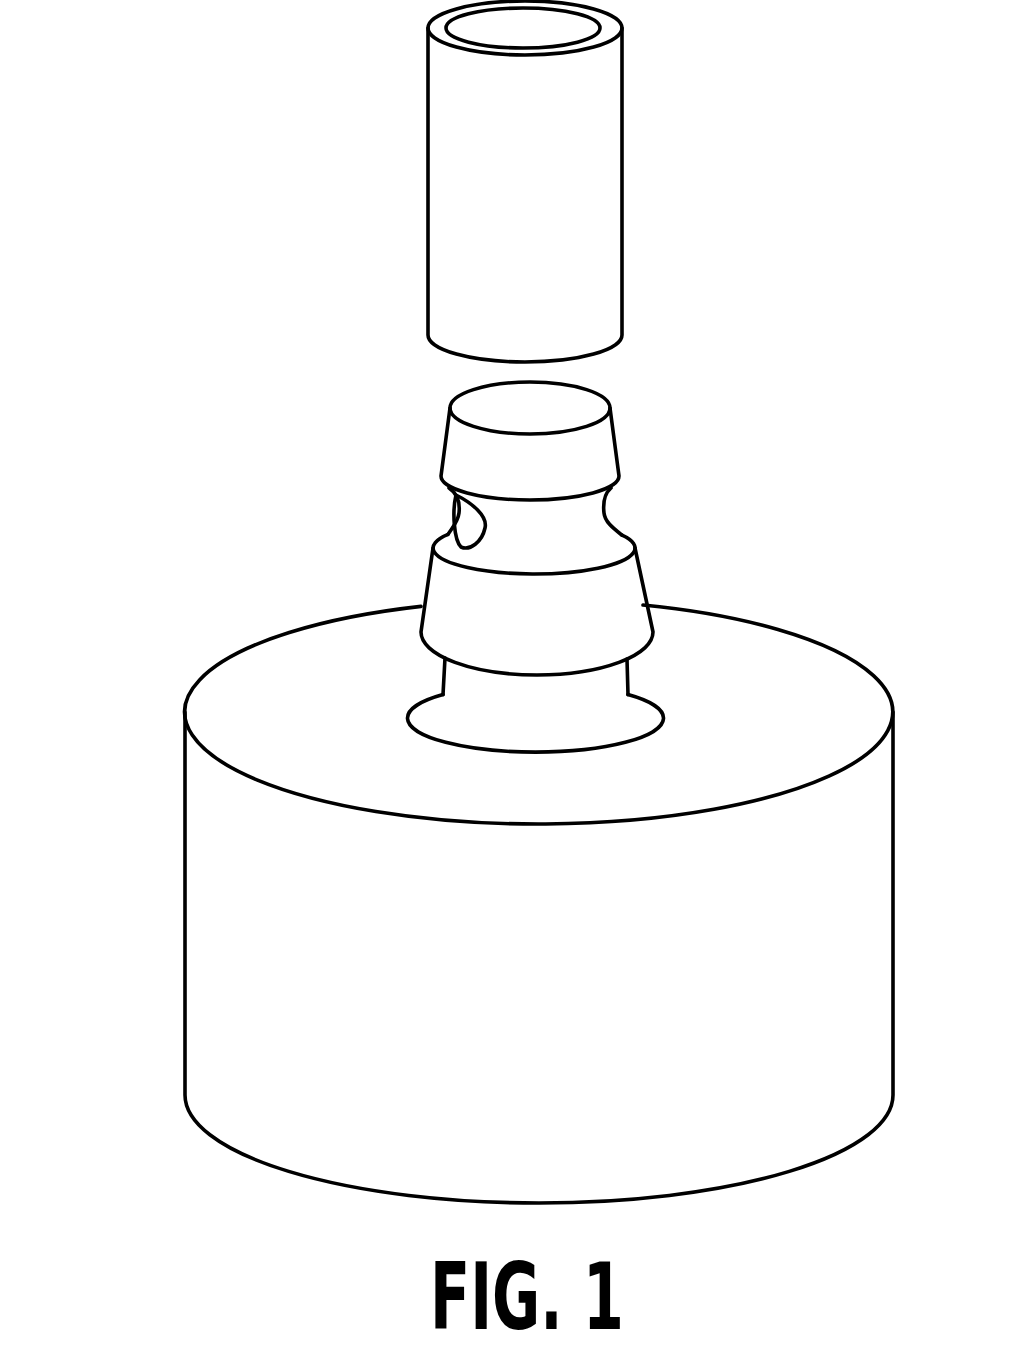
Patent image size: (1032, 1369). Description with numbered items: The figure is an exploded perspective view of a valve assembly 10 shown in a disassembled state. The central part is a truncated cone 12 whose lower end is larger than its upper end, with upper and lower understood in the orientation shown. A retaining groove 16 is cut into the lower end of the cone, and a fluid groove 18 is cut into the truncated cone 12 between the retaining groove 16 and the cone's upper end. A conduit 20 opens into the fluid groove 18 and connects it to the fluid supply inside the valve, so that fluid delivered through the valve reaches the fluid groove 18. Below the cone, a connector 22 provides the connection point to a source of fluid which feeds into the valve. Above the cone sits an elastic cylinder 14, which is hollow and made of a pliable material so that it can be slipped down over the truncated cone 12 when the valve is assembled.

The valve assembly 10 is at (198, 523).
The truncated cone 12 is at (595, 443).
The elastic cylinder 14 is at (587, 147).
The retaining groove 16 is at (620, 700).
The fluid groove 18 is at (605, 522).
The conduit 20 is at (465, 522).
The connector 22 is at (213, 806).